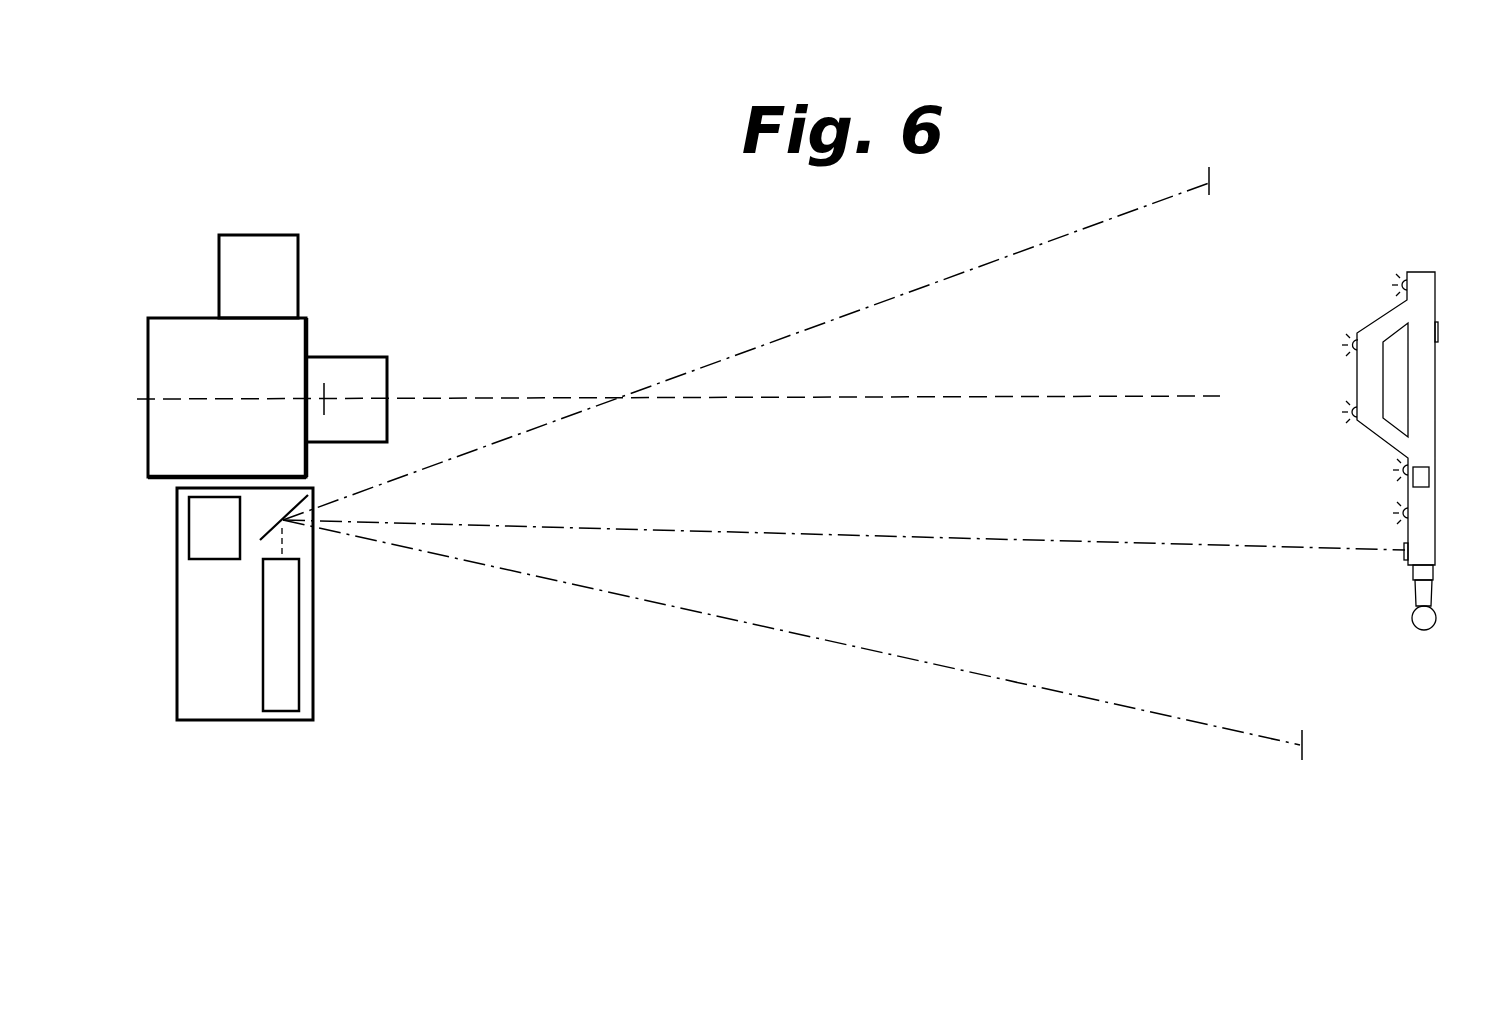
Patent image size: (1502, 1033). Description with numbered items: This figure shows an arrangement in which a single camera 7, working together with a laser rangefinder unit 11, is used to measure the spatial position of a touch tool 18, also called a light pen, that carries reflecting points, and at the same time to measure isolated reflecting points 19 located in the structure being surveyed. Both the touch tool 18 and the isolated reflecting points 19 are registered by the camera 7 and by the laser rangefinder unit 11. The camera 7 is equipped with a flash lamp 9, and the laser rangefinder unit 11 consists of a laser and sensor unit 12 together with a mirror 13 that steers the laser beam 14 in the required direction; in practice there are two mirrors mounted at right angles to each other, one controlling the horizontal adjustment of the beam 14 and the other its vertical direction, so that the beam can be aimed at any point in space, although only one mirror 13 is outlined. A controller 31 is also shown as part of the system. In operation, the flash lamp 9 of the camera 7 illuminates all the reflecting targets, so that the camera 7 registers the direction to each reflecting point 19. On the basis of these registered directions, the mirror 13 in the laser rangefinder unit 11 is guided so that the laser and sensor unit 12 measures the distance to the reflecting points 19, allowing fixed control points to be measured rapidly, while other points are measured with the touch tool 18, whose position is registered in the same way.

The camera 7 is at (170, 362).
The flash lamp 9 is at (251, 285).
The laser rangefinder unit 11 is at (224, 706).
The laser and sensor unit 12 is at (281, 619).
The mirror 13 is at (272, 517).
The laser beam 14 is at (788, 532).
The touch tool 18 is at (1442, 300).
The reflecting point 19 is at (1225, 186).
The controller 31 is at (199, 541).